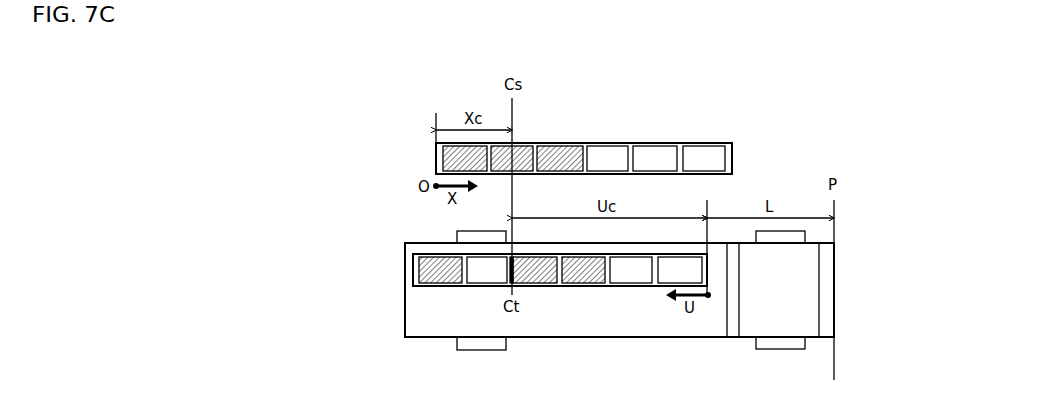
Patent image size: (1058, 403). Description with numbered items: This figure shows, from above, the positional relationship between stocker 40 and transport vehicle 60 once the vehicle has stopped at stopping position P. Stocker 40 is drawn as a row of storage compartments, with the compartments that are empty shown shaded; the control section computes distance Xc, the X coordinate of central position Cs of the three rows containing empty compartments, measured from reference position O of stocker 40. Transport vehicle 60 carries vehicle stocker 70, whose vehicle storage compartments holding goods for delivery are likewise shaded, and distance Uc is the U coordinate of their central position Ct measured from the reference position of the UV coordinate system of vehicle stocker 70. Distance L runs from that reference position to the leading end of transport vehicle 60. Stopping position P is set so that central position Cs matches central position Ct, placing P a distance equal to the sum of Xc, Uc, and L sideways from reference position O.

The stocker 40 is at (678, 125).
The transport vehicle 60 is at (848, 227).
The vehicle stocker 70 is at (567, 300).